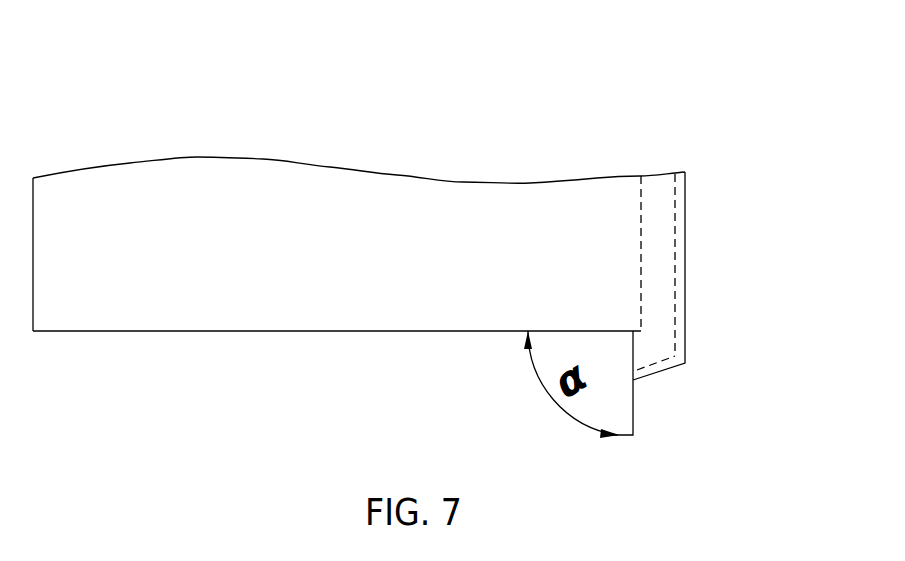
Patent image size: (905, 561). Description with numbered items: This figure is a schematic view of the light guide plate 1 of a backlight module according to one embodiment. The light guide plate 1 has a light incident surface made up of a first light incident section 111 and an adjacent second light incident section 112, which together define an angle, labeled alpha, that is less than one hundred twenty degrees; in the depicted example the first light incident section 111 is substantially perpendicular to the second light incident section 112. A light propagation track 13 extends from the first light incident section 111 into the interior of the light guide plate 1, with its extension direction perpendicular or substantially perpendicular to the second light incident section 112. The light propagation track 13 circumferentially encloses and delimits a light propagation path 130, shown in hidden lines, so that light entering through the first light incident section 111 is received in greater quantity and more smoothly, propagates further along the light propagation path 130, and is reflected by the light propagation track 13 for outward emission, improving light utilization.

The light guide plate 1 is at (265, 103).
The light propagation track 13 is at (675, 259).
The light propagation path 130 is at (658, 203).
The first light incident section 111 is at (633, 353).
The second light incident section 112 is at (458, 332).